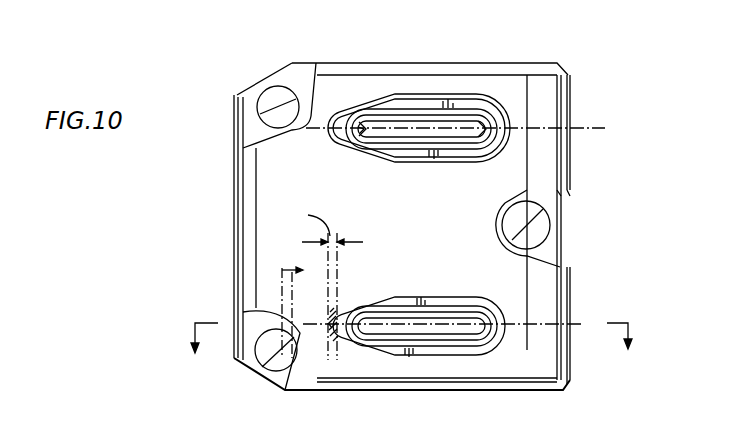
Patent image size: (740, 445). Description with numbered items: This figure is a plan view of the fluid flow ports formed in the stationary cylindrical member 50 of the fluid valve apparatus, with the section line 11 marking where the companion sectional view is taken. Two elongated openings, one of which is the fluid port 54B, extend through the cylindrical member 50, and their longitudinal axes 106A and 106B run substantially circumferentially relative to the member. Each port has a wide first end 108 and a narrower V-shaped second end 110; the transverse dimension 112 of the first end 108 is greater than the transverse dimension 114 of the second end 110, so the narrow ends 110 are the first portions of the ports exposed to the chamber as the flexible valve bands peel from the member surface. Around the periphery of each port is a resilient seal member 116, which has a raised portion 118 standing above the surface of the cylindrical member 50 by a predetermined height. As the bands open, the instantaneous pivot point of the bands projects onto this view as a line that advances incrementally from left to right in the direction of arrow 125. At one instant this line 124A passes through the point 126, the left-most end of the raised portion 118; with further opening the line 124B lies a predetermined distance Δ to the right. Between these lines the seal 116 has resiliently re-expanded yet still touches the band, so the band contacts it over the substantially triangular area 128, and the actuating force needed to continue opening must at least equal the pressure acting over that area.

The stationary cylindrical member 50 is at (557, 283).
The first end 108 is at (500, 123).
The longitudinal axis 106A is at (573, 324).
The longitudinal axis 106B is at (605, 128).
The second end 110 is at (360, 136).
The transverse dimension 112 is at (486, 151).
The transverse dimension 114 is at (384, 119).
The resilient seal member 116 is at (507, 143).
The raised portion 118 is at (386, 148).
The fluid port 54B is at (452, 138).
The line 124A is at (328, 352).
The line 124B is at (337, 356).
The arrow 125 is at (282, 268).
The point 126 is at (328, 324).
The substantially triangular area 128 is at (337, 303).
The section line 11- 11 is at (416, 338).